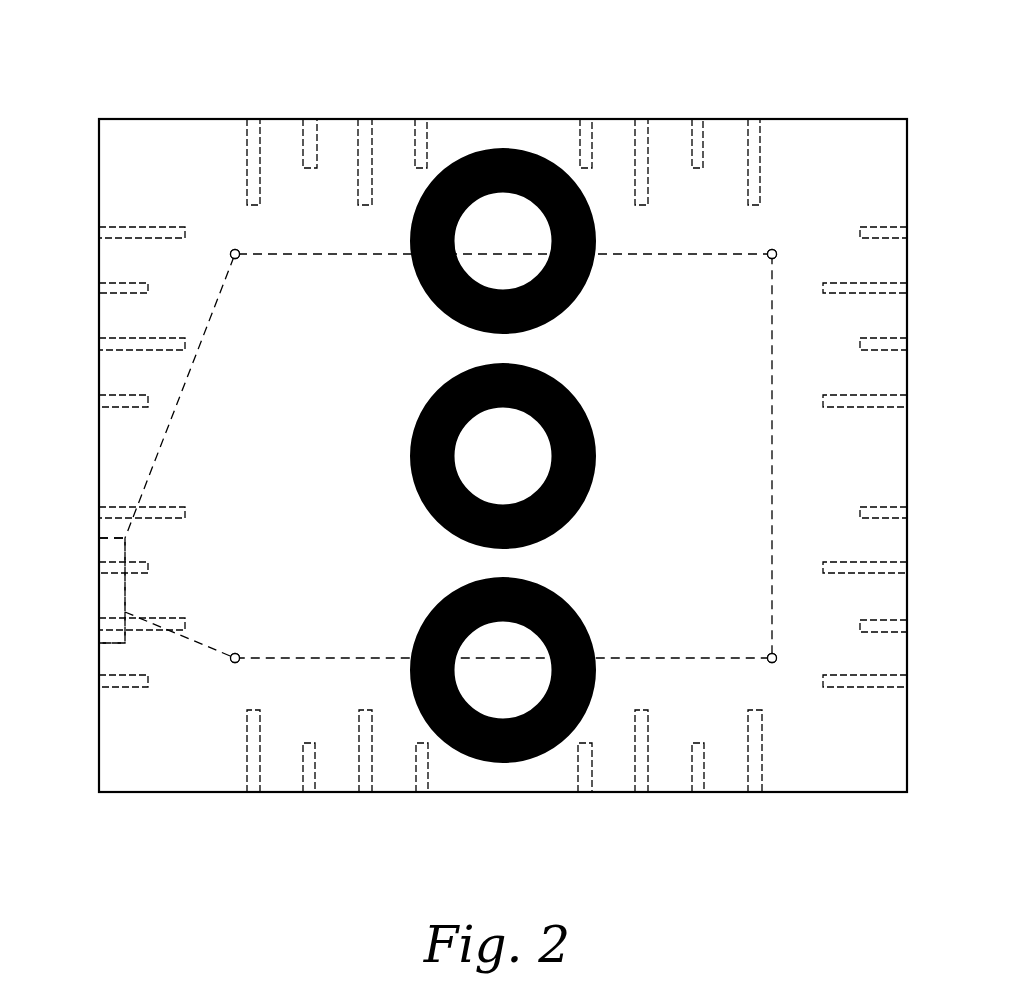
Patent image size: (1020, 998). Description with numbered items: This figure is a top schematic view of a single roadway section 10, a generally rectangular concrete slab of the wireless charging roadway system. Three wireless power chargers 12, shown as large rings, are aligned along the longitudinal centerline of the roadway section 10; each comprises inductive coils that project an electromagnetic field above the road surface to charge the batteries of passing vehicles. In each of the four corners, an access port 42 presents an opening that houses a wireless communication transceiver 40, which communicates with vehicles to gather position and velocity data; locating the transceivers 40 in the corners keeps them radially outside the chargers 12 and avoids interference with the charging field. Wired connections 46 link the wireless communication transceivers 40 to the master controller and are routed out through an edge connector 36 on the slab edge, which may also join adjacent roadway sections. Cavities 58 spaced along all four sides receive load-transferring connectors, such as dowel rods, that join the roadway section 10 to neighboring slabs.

The roadway section 10 is at (80, 84).
The wireless power charger 12 is at (467, 757).
The edge connector 36 is at (105, 597).
The wireless communication transceiver 40 is at (230, 254).
The access port 42 is at (225, 235).
The wired connection 46 is at (165, 437).
The cavity 58 is at (83, 335).